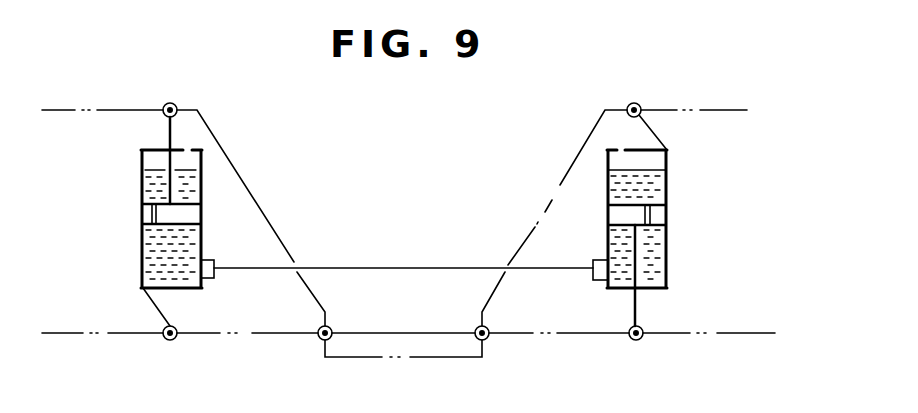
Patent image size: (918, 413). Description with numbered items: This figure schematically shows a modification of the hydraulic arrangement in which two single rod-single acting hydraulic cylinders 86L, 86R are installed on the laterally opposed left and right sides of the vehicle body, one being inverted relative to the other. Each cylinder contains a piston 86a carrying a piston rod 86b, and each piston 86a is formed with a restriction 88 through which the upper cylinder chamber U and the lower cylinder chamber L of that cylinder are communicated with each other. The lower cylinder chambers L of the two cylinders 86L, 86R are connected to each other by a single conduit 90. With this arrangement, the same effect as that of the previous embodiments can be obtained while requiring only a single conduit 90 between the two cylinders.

The left hydraulic cylinder 86L is at (147, 144).
The right hydraulic cylinder 86R is at (692, 143).
The piston 86a is at (195, 212).
The piston rod 86b is at (171, 133).
The restriction 88 is at (145, 212).
The upper cylinder chamber U is at (141, 183).
The lower cylinder chamber L is at (141, 270).
The conduit 90 is at (435, 266).